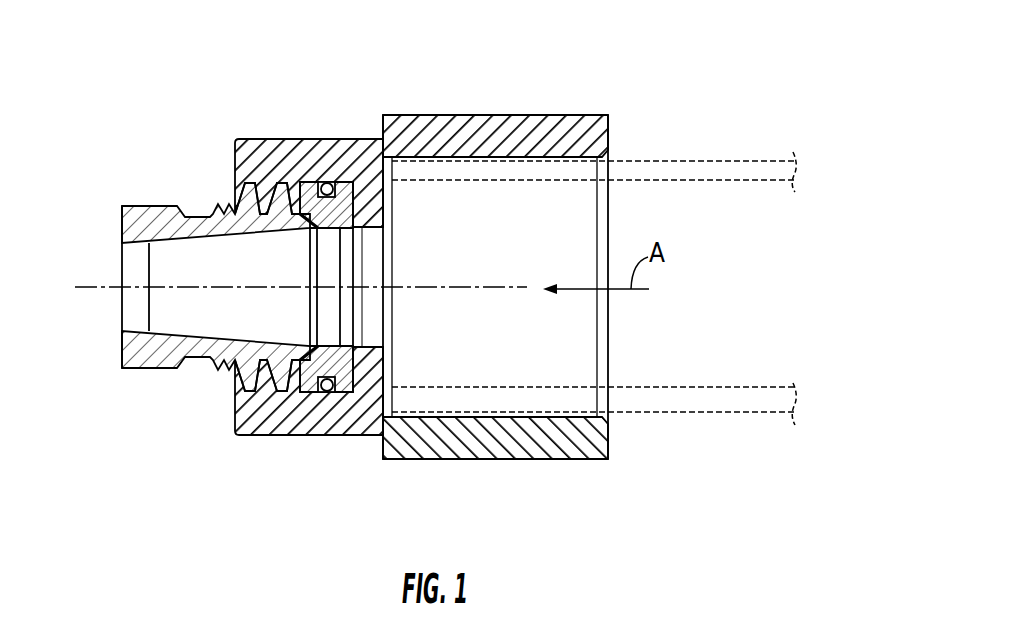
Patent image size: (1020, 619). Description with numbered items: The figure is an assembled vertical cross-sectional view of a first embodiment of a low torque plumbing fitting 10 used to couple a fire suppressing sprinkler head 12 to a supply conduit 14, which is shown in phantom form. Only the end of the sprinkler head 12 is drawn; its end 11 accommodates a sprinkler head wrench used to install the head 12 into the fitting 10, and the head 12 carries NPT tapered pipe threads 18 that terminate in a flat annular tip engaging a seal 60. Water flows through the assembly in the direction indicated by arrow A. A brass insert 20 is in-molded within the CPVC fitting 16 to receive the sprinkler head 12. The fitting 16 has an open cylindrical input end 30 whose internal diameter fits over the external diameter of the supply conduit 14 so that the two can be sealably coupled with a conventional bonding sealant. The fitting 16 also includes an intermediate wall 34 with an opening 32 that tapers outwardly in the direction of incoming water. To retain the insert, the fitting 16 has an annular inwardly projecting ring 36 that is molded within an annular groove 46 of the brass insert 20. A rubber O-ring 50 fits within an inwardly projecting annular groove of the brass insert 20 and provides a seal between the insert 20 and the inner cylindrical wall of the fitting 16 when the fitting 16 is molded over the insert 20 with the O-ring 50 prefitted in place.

The low torque plumbing fitting 10 is at (384, 72).
The end of the sprinkler head 11 is at (140, 205).
The sprinkler head 12 is at (144, 378).
The supply conduit 14 is at (685, 161).
The CPVC fitting 16 is at (455, 460).
The NPT tapered pipe threads 18 is at (228, 206).
The brass insert 20 is at (226, 380).
The input end 30 is at (610, 442).
The opening 32 is at (374, 346).
The intermediate wall 34 is at (376, 218).
The inwardly projecting ring 36 is at (272, 190).
The annular groove 46 is at (252, 362).
The O-ring 50 is at (325, 393).
The seal 60 is at (324, 268).